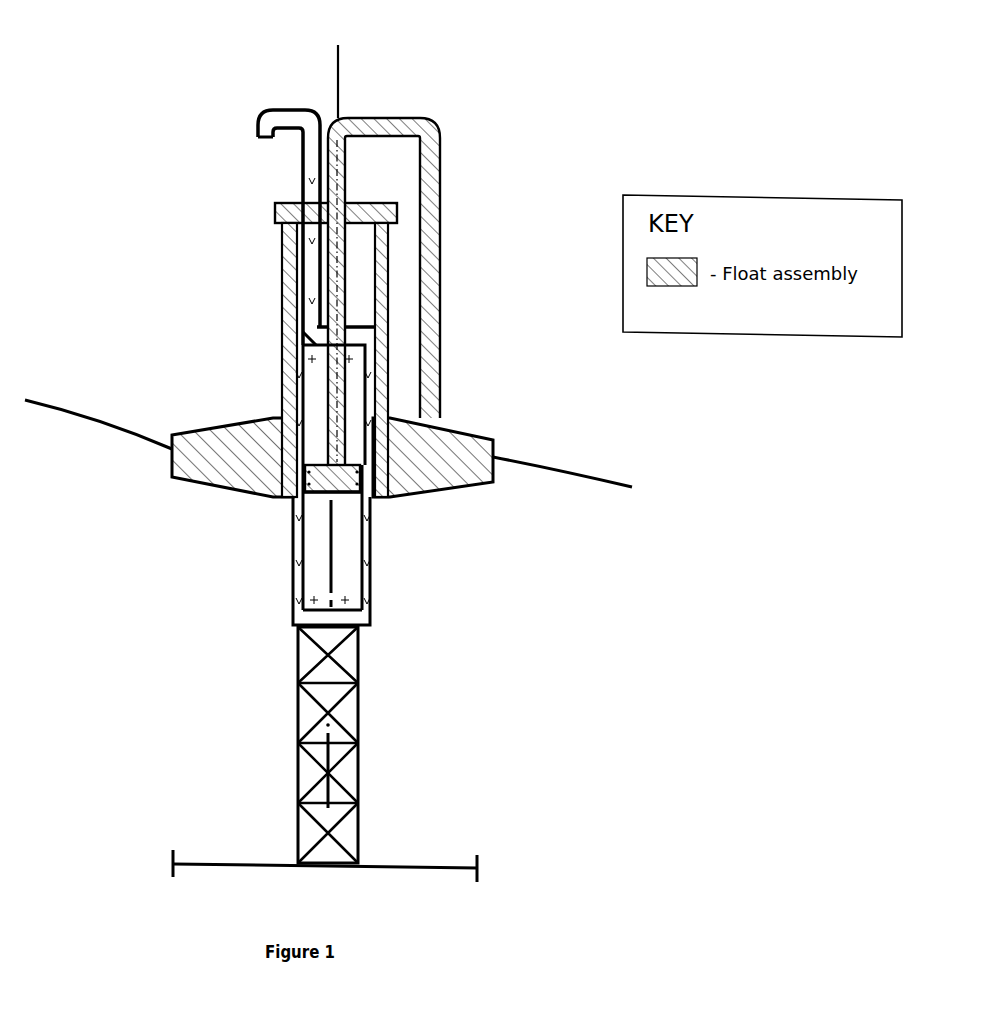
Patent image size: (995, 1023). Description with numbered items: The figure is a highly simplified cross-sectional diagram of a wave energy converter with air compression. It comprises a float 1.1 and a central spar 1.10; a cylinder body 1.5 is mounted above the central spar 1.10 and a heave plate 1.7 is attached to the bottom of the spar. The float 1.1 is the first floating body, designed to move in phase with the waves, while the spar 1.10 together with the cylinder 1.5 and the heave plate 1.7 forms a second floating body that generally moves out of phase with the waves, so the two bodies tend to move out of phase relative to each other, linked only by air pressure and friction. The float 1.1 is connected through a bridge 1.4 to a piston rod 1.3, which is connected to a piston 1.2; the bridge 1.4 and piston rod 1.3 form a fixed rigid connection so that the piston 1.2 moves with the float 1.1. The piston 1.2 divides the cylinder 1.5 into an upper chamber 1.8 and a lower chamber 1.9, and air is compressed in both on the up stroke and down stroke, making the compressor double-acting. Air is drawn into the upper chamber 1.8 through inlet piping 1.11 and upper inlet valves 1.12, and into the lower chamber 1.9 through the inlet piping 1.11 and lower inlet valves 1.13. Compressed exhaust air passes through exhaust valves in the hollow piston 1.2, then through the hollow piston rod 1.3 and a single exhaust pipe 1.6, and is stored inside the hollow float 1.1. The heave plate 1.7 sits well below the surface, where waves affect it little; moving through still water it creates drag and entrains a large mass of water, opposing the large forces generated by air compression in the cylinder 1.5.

The float 1.1 is at (443, 442).
The piston 1.2 is at (304, 504).
The piston rod 1.3 is at (352, 260).
The bridge 1.4 is at (392, 309).
The cylinder body 1.5 is at (372, 587).
The exhaust pipe 1.6 is at (444, 130).
The heave plate 1.7 is at (449, 848).
The upper chamber 1.8 is at (312, 383).
The lower chamber 1.9 is at (347, 523).
The central spar 1.10 is at (289, 790).
The inlet piping 1.11 is at (256, 115).
The upper inlet valves 1.12 is at (302, 332).
The lower inlet valves 1.13 is at (315, 605).